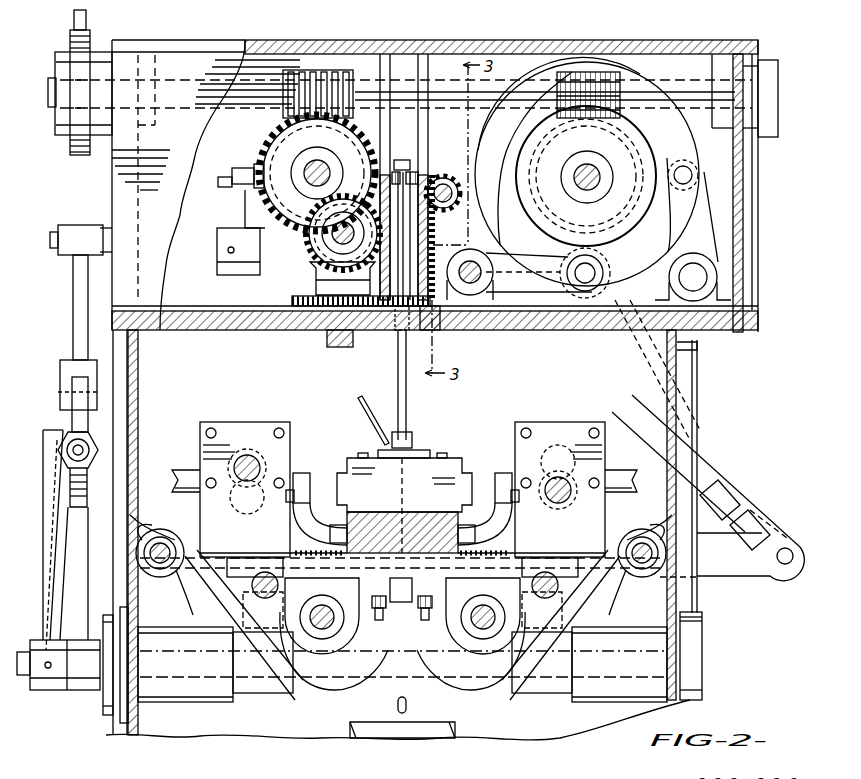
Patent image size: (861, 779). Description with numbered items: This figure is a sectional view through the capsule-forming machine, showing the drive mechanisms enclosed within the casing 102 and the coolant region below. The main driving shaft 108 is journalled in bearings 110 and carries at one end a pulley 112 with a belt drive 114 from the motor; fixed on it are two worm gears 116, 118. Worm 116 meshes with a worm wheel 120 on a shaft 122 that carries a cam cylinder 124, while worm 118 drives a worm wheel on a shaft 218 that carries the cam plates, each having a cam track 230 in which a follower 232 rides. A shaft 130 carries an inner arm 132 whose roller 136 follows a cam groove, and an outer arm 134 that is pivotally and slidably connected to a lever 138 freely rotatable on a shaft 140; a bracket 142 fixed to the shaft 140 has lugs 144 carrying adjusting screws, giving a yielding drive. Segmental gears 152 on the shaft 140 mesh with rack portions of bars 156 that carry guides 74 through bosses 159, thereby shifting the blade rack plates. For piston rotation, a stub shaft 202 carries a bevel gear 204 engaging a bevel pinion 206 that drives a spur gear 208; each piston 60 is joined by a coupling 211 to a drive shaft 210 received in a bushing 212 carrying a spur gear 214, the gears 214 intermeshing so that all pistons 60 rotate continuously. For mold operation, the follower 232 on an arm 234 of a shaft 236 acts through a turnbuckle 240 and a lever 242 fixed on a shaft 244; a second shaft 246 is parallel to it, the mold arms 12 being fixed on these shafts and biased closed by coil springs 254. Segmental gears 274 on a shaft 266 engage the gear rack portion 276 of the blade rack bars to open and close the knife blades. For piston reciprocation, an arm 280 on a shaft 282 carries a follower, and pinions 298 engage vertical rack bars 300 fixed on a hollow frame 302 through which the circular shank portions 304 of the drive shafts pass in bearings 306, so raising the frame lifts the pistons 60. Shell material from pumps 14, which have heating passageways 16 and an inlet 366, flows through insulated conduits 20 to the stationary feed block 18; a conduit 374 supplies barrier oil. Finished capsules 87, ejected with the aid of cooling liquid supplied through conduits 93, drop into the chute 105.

The pivoting arms 12 is at (305, 686).
The pumps 14 is at (245, 408).
The passageways 16 is at (401, 497).
The stationary feed block 18 is at (345, 518).
The insulated conduits 20 is at (292, 512).
The pistons 60 is at (408, 475).
The guides 74 is at (555, 560).
The finished capsules 87 is at (396, 705).
The conduits 93 is at (398, 620).
The casing 102 is at (697, 355).
The chute 105 is at (455, 704).
The main driving shaft 108 is at (248, 60).
The bearings 110 is at (124, 58).
The pulley 112 is at (62, 135).
The belt drive 114 is at (88, 14).
The worm gear 116 is at (322, 70).
The worm gear 118 is at (638, 70).
The worm wheel 120 is at (290, 128).
The shaft 122 is at (317, 165).
The cylinder 124 is at (278, 142).
The shaft 130 is at (318, 252).
The arm 132 is at (245, 205).
The arm 134 is at (77, 232).
The roller 136 is at (258, 162).
The lever 138 is at (72, 420).
The shaft 140 is at (28, 684).
The bracket 142 is at (43, 503).
The lugs 144 is at (96, 454).
The segmental gears 152 is at (250, 617).
The bars 156 is at (265, 572).
The bosses 159 is at (245, 592).
The stub shaft 202 is at (265, 198).
The bevel gear 204 is at (336, 230).
The bevel pinion 206 is at (316, 272).
The spur gear 208 is at (292, 301).
The drive shaft 210 is at (408, 392).
The coupling 211 is at (412, 440).
The bushing 212 is at (392, 330).
The spur gear 214 is at (440, 312).
The shaft 218 is at (583, 168).
The cam track 230 is at (548, 70).
The follower 232 is at (603, 272).
The arm 234 is at (545, 266).
The shaft 236 is at (484, 270).
The turnbuckle 240 is at (702, 445).
The lever 242 is at (752, 570).
The shaft 244 is at (655, 513).
The shaft 246 is at (182, 530).
The coil springs 254 is at (185, 596).
The shaft 266 is at (487, 628).
The segmental gears 274 is at (450, 592).
The gear rack portion 276 is at (315, 550).
The arm 280 is at (700, 230).
The shaft 282 is at (708, 274).
The pinions 298 is at (460, 182).
The rack bars 300 is at (432, 218).
The hollow frame 302 is at (412, 175).
The circular shank portions 304 is at (401, 160).
The bearings 306 is at (414, 172).
The inlet 366 is at (190, 458).
The conduit 374 is at (372, 430).